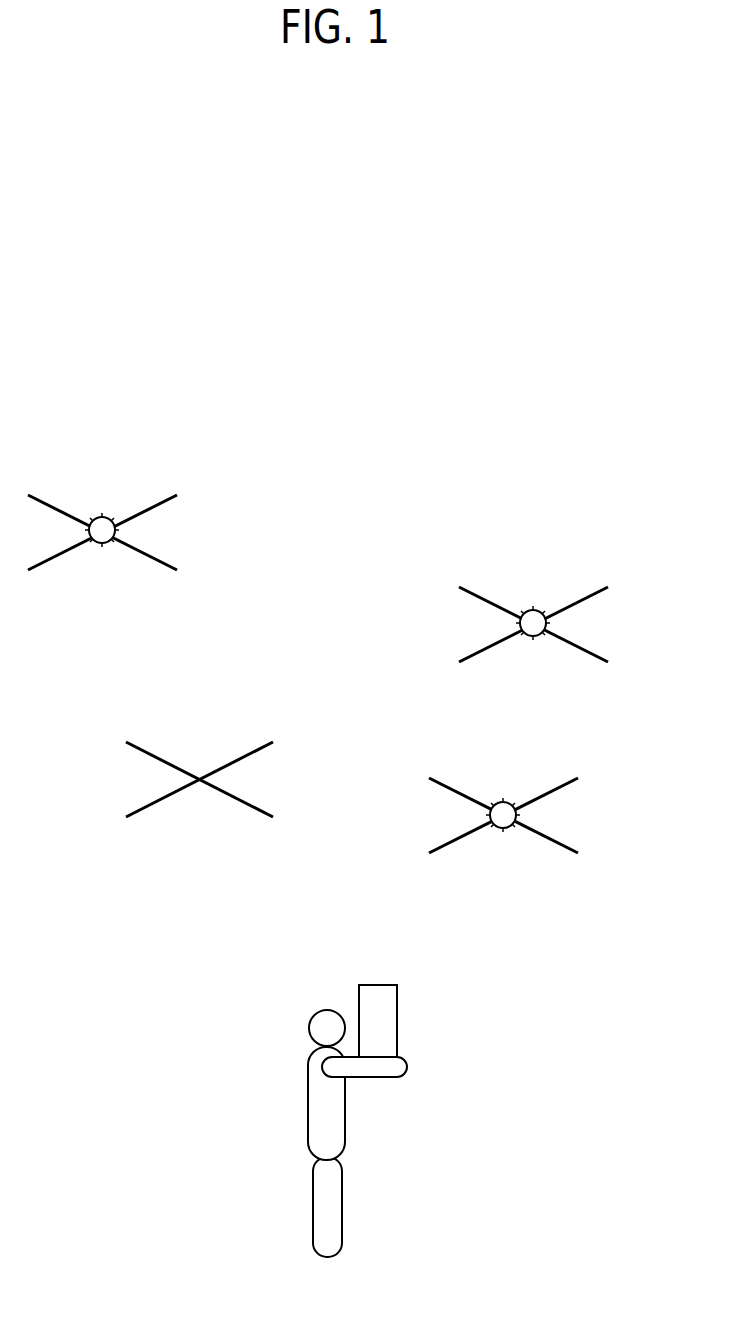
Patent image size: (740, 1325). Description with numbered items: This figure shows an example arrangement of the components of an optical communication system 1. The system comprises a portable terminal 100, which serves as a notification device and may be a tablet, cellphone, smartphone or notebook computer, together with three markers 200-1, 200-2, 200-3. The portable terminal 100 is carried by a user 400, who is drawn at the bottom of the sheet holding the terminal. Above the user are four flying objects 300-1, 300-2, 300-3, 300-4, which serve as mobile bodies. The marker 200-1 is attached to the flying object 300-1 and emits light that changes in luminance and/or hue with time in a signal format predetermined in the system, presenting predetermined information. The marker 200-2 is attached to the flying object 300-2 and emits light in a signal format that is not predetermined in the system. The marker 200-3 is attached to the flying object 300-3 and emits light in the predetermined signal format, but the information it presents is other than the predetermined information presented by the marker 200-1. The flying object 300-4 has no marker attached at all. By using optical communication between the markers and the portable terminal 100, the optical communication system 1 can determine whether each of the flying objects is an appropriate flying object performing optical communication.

The optical communication system 1 is at (255, 178).
The portable terminal 100 is at (397, 1013).
The marker 200-1 is at (117, 531).
The marker 200-2 is at (548, 623).
The marker 200-3 is at (518, 814).
The flying object 300-1 is at (52, 508).
The flying object 300-2 is at (483, 595).
The flying object 300-3 is at (453, 787).
The flying object 300-4 is at (150, 753).
The user 400 is at (327, 1147).